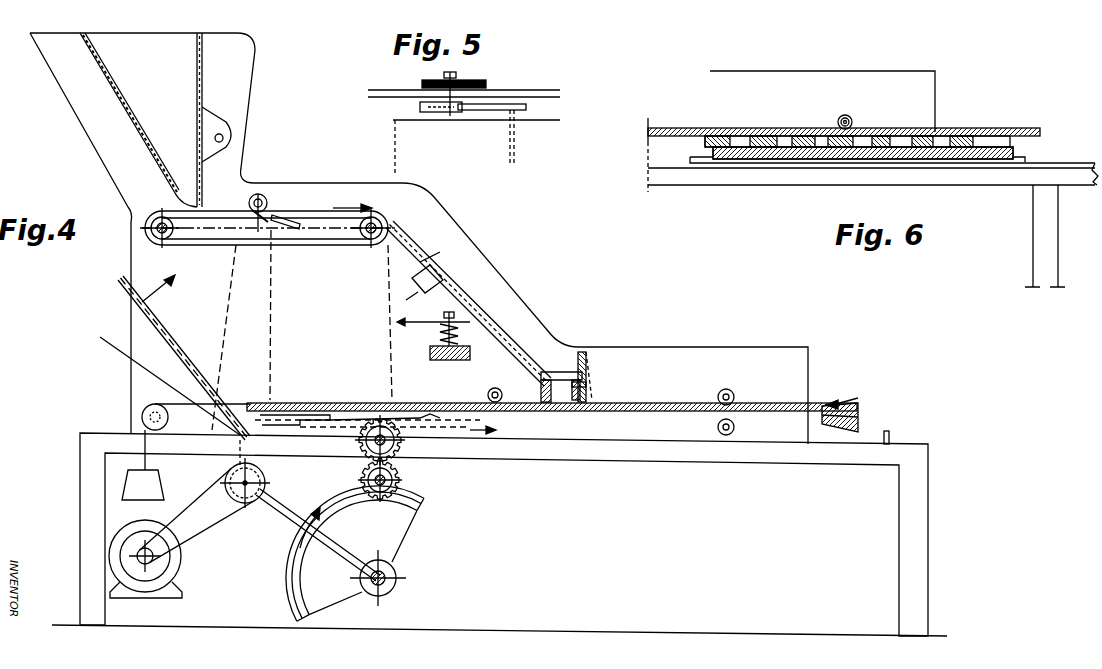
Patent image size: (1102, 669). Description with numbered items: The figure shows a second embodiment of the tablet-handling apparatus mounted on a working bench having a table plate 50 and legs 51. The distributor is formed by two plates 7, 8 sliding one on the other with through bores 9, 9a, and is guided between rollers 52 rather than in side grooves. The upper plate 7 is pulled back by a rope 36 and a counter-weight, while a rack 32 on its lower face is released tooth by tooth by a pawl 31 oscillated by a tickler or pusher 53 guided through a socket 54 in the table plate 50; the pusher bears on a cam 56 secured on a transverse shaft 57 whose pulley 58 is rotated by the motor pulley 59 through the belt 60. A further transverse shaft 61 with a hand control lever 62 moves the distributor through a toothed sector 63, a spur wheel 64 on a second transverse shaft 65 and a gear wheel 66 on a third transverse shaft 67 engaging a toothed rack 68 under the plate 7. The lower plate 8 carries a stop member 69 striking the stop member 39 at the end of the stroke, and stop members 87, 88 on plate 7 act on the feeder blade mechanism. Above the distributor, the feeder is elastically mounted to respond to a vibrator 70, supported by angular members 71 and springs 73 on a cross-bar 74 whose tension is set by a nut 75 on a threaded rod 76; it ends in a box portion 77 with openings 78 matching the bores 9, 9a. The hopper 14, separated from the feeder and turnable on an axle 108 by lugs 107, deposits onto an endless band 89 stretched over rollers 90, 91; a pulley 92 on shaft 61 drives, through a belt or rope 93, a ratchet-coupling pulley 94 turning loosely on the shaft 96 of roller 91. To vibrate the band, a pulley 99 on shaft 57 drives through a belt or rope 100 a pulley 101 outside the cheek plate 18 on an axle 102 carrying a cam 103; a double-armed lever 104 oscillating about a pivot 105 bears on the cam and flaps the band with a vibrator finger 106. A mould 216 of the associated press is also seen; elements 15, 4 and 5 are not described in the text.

In FIG. 4, the hopper 14 is at (202, 80).
In FIG. 4, the lugs 107 is at (230, 120).
In FIG. 4, the axle 108 is at (223, 138).
In FIG. 4, the endless band 89 is at (216, 211).
In FIG. 4, the roller 90 is at (161, 238).
In FIG. 4, the roller 91 is at (365, 242).
In FIG. 4, the shaft of the roller 96 is at (355, 240).
In FIG. 4, the second pulley 101 is at (262, 196).
In FIG. 5, the second pulley 101 is at (470, 82).
In FIG. 4, the cam 103 is at (266, 214).
In FIG. 5, the cam 103 is at (420, 108).
In FIG. 4, the double-armed lever 104 is at (298, 224).
In FIG. 5, the double-armed lever 104 is at (505, 104).
In FIG. 4, the second pulley 94 is at (374, 213).
In FIG. 4, the cheek plate 18 is at (440, 219).
In FIG. 6, the cheek plate 18 is at (723, 78).
In FIG. 4, the vibrator 70 is at (456, 270).
In FIG. 4, the angular member 71 is at (425, 322).
In FIG. 4, the nut 75 is at (458, 330).
In FIG. 4, the threaded rod 76 is at (462, 350).
In FIG. 4, the cross-bar 74 is at (470, 355).
In FIG. 4, the spring 73 is at (430, 353).
In FIG. 4, the station 15 is at (535, 346).
In FIG. 4, the box portion 77 is at (541, 384).
In FIG. 4, the passages or openings 78 is at (584, 386).
In FIG. 4, the stop member 88 is at (518, 422).
In FIG. 4, the through bores 9 is at (648, 438).
In FIG. 6, the through bores 9 is at (738, 136).
In FIG. 6, the through bores 9a is at (772, 145).
In FIG. 4, the rollers 52 is at (732, 394).
In FIG. 6, the rollers 52 is at (851, 119).
In FIG. 4, the table plate 50 is at (668, 448).
In FIG. 4, the legs 51 is at (85, 480).
In FIG. 6, the legs 51 is at (1045, 220).
In FIG. 4, the stop member 39 is at (890, 437).
In FIG. 4, the stop member 69 is at (848, 428).
In FIG. 4, the stop member 87 is at (834, 403).
In FIG. 4, the socket 54 is at (186, 452).
In FIG. 4, the tickler or pusher 53 is at (156, 380).
In FIG. 4, the control lever 62 is at (120, 283).
In FIG. 4, the pulley of the motor 59 is at (160, 563).
In FIG. 4, the transverse shaft 57 is at (186, 509).
In FIG. 4, the belt 60 is at (202, 531).
In FIG. 4, the cam 56 is at (256, 502).
In FIG. 6, the cam 56 is at (906, 178).
In FIG. 4, the pulley 58 is at (244, 500).
In FIG. 4, the pulley 99 is at (265, 488).
In FIG. 4, the gear wheel 66 is at (402, 446).
In FIG. 4, the spur wheel 64 is at (398, 481).
In FIG. 4, the second transverse shaft 65 is at (367, 481).
In FIG. 4, the third transverse shaft 67 is at (362, 447).
In FIG. 4, the toothed sector 63 is at (302, 592).
In FIG. 4, the pulley 92 is at (398, 586).
In FIG. 4, the transverse shaft 61 is at (396, 578).
In FIG. 4, the rope 36 is at (204, 403).
In FIG. 4, the pawl 31 is at (247, 400).
In FIG. 4, the upper plate 7 is at (250, 402).
In FIG. 6, the upper plate 7 is at (920, 132).
In FIG. 4, the rack 32 is at (291, 403).
In FIG. 4, the toothed rack 68 is at (342, 403).
In FIG. 4, the belt or rope 100 is at (272, 338).
In FIG. 4, the belt or rope 93 is at (352, 322).
In FIG. 5, the axle 102 is at (450, 114).
In FIG. 5, the pivot 105 is at (498, 132).
In FIG. 5, the vibrator finger 106 is at (514, 136).
In FIG. 6, the lower plate 8 is at (965, 132).
In FIG. 6, the mould 216 is at (840, 170).
In FIG. 6, the base 4 is at (745, 160).
In FIG. 6, the base block 5 is at (785, 158).